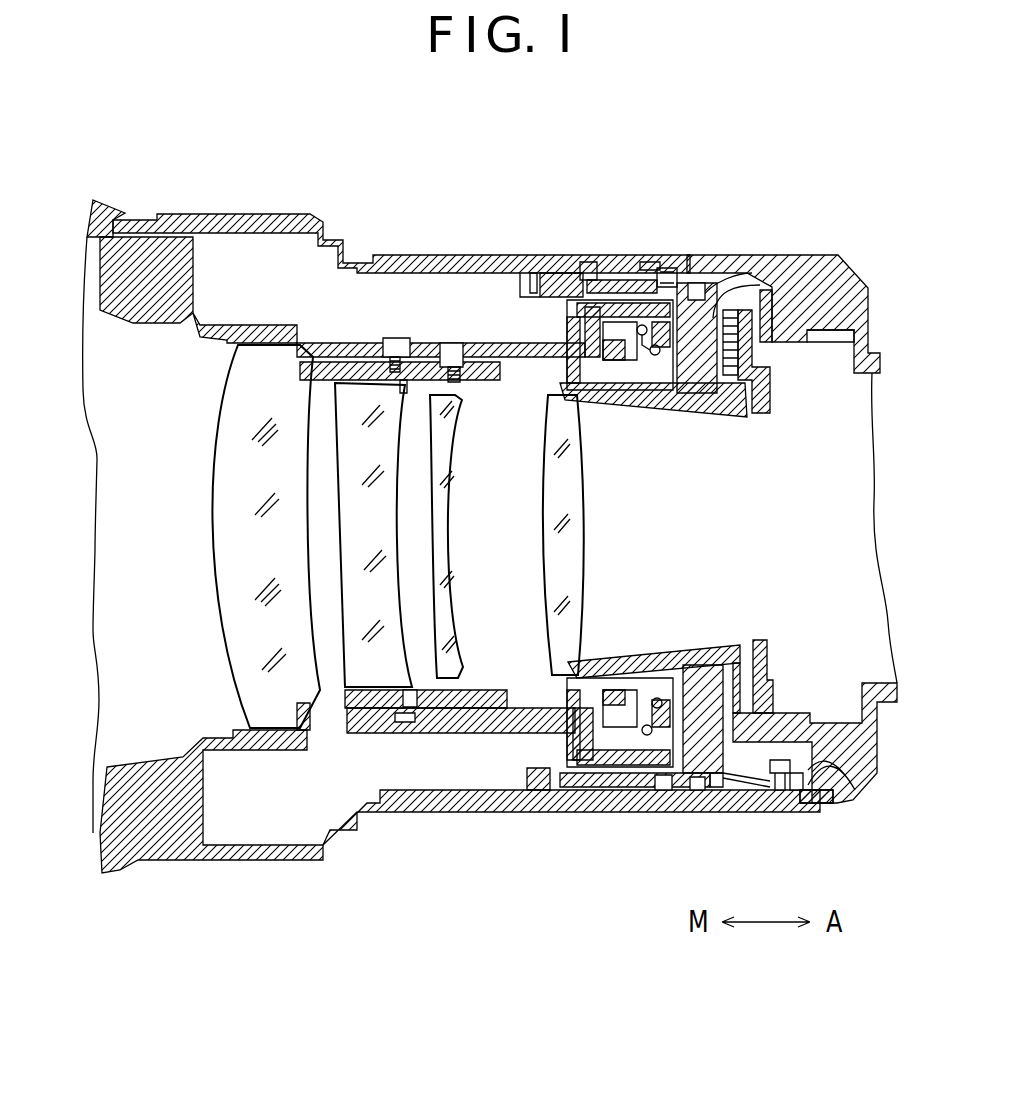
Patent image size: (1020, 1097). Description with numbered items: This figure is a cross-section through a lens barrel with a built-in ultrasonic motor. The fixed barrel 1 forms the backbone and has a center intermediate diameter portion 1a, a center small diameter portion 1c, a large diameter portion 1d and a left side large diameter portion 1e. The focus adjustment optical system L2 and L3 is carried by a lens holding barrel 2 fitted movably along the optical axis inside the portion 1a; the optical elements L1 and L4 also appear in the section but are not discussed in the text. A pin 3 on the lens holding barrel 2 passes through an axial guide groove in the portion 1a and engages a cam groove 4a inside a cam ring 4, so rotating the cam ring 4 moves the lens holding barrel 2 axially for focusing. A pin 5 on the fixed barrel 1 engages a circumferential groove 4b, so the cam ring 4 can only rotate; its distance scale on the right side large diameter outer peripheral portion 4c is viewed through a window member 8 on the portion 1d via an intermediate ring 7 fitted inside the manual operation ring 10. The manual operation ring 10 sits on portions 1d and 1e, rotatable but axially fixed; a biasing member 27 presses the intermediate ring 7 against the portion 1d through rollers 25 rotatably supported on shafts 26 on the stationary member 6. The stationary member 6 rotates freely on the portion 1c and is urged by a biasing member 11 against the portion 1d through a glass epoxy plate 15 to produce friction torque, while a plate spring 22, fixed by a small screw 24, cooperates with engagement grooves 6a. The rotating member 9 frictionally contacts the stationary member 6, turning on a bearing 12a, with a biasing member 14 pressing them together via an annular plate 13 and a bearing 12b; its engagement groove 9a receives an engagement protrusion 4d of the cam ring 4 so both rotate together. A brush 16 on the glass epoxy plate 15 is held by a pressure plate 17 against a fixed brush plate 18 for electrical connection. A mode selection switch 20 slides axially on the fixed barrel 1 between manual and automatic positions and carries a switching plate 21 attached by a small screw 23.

The fixed barrel 1 is at (108, 300).
The center intermediate diameter portion 1a is at (503, 340).
The center small diameter portion 1c is at (678, 417).
The large diameter portion 1d is at (852, 262).
The left side large diameter portion 1e is at (107, 230).
The lens holding barrel 2 is at (377, 705).
The pin 3 is at (457, 352).
The cam ring 4 is at (483, 722).
The cam groove 4a is at (430, 340).
The circumferential groove 4b is at (407, 722).
The right side large diameter outer peripheral portion 4c is at (657, 266).
The engagement protrusion 4d is at (558, 297).
The pin 5 is at (392, 336).
The stator 6 is at (730, 310).
The engagement grooves 6a is at (703, 285).
The intermediate ring 7 is at (623, 790).
The window member 8 is at (633, 262).
The rotor 9 is at (573, 790).
The engagement groove 9a is at (612, 262).
The manual operation ring 10 is at (322, 230).
The biasing member 11 is at (640, 405).
The bearing 12a is at (657, 415).
The bearing 12b is at (680, 660).
The annular plate 13 is at (637, 660).
The biasing member 14 is at (610, 665).
The glass epoxy plate 15 is at (755, 312).
The brush 16 is at (728, 415).
The pressure plate 17 is at (782, 412).
The fixed brush plate 18 is at (805, 285).
The mode selection switch 20 is at (787, 800).
The switching plate 21 is at (765, 793).
The plate spring 22 is at (738, 790).
The small screw 23 is at (857, 797).
The small screw 24 is at (833, 803).
The rollers 25 is at (663, 793).
The shafts 26 is at (673, 793).
The biasing member 27 is at (547, 785).
The first lens group L1 is at (240, 557).
The focus adjustment optical system L2 is at (360, 610).
The focus adjustment optical system L3 is at (443, 557).
The fourth lens group L4 is at (583, 557).